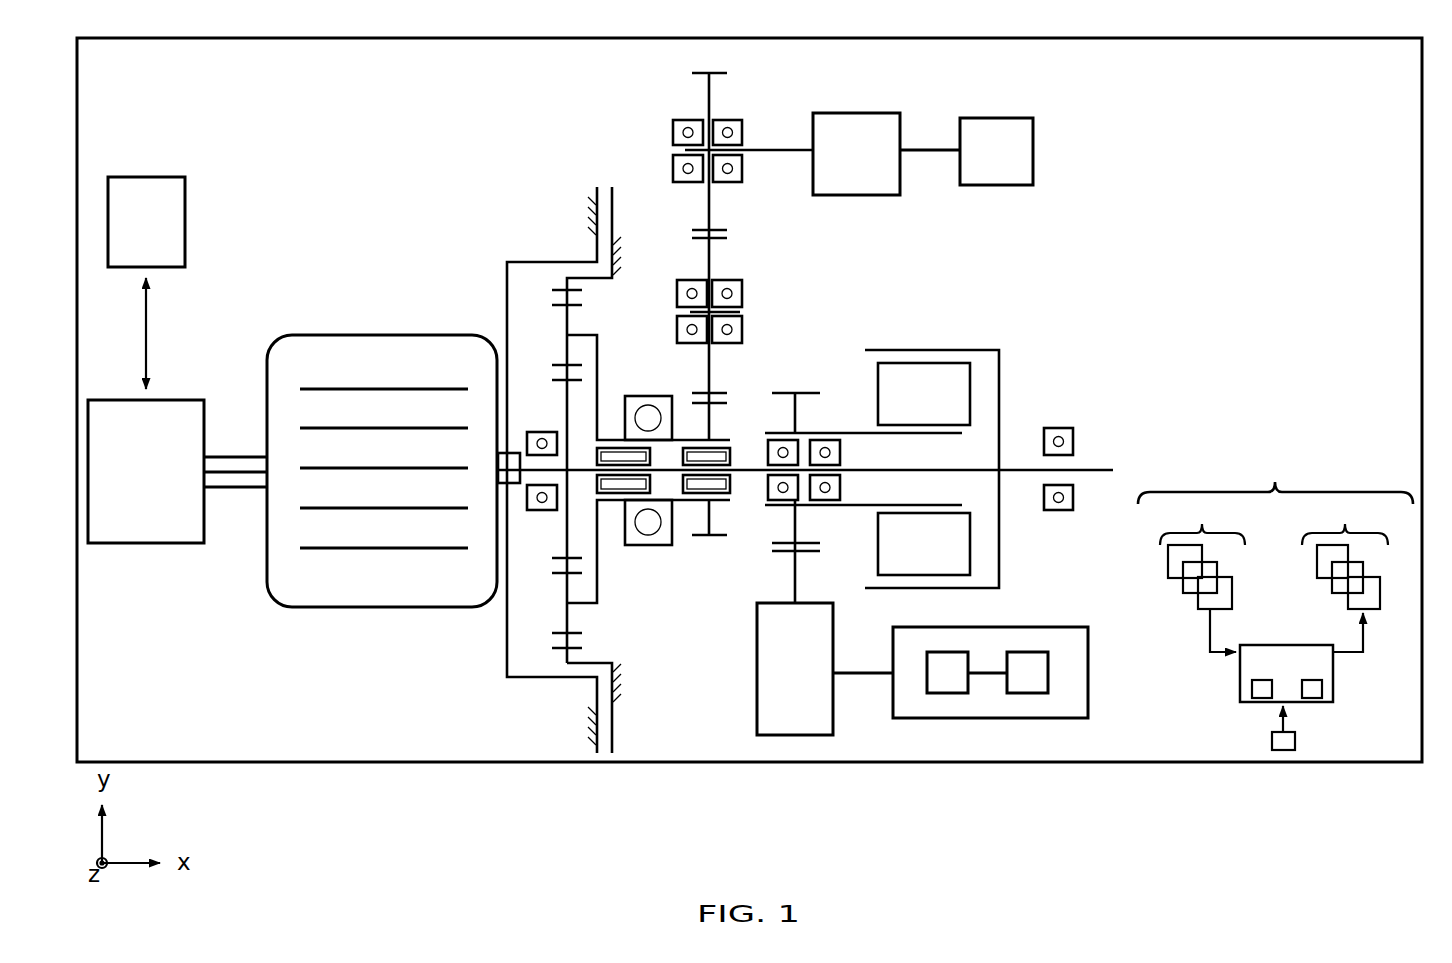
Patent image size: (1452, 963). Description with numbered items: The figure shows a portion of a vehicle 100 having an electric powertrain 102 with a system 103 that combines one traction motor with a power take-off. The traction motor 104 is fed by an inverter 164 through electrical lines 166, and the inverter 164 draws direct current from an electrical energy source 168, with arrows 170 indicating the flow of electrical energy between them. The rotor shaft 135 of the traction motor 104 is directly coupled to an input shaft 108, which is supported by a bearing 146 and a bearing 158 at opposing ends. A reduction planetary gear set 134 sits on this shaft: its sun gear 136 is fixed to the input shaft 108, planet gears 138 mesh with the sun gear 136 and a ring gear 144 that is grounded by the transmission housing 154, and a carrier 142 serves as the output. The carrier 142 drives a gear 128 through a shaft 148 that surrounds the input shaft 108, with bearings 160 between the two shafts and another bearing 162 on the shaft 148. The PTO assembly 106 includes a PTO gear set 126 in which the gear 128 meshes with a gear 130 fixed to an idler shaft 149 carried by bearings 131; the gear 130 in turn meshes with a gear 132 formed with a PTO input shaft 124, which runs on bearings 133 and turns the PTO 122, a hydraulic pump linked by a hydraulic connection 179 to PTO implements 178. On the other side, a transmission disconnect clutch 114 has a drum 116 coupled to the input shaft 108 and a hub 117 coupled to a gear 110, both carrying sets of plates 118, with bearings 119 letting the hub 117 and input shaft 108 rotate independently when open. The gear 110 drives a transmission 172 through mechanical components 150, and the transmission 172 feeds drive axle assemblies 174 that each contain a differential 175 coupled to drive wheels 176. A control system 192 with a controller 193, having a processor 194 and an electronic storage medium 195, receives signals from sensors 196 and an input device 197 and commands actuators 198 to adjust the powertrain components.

The vehicle 100 is at (1390, 38).
The electric powertrain 102 is at (1217, 231).
The system 103 is at (1129, 291).
The traction motor 104 is at (330, 335).
The PTO assembly 106 is at (543, 122).
The input shaft 108 is at (1092, 470).
The gear 110 is at (780, 392).
The transmission disconnect clutch 114 is at (927, 308).
The drum 116 is at (905, 350).
The hub 117 is at (903, 433).
The plates 118 is at (878, 376).
The bearings 119 is at (850, 490).
The PTO 122 is at (903, 133).
The PTO input shaft 124 is at (770, 150).
The PTO gear set 126 is at (855, 240).
The gear 128 is at (718, 412).
The gear 130 is at (710, 260).
The bearings 131 is at (754, 289).
The gear 132 is at (708, 98).
The bearings 133 is at (755, 177).
The reduction planetary gear set 134 is at (545, 282).
The rotor shaft 135 is at (502, 474).
The sun gear 136 is at (560, 413).
The planet gears 138 is at (565, 348).
The carrier 142 is at (599, 352).
The ring gear 144 is at (572, 648).
The bearing 146 is at (531, 518).
The shaft 148 is at (605, 440).
The idler shaft 149 is at (727, 313).
The mechanical component(s) 150 is at (793, 562).
The transmission housing 154 is at (614, 207).
The bearing 158 is at (1058, 416).
The bearings 160 is at (740, 493).
The bearing 162 is at (655, 550).
The inverter 164 is at (167, 543).
The electrical lines 166 is at (237, 510).
The electrical energy source 168 is at (121, 177).
The arrows 170 is at (146, 333).
The transmission 172 is at (757, 703).
The drive axle assemblies 174 is at (943, 720).
The differential 175 is at (948, 652).
The drive wheels 176 is at (1028, 652).
The PTO implements 178 is at (1024, 118).
The hydraulic connection 179 is at (932, 153).
The control system 192 is at (1275, 480).
The controller 193 is at (1306, 676).
The processor 194 is at (1252, 690).
The electronic storage medium 195 is at (1322, 690).
The sensors 196 is at (1202, 578).
The input device 197 is at (1295, 742).
The actuators 198 is at (1345, 578).